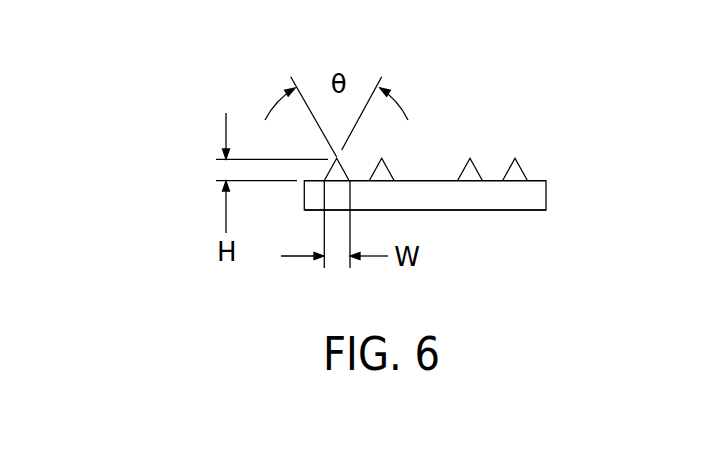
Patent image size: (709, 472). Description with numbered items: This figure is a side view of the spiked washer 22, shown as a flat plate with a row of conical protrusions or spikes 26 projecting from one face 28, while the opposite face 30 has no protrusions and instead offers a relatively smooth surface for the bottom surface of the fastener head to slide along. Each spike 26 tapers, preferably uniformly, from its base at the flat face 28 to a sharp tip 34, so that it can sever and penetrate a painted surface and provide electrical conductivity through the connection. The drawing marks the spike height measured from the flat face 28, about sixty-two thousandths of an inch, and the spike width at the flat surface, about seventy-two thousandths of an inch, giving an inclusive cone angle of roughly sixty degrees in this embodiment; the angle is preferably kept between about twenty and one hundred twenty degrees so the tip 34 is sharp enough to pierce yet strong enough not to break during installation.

The spiked washer 22 is at (546, 198).
The spikes 26 is at (520, 162).
The face 28 is at (535, 172).
The opposite face 30 is at (493, 210).
The tip 34 is at (470, 162).